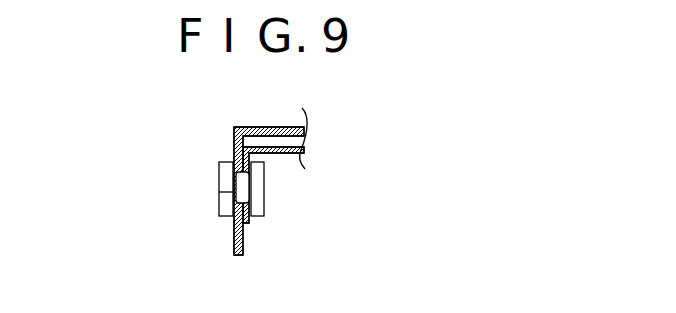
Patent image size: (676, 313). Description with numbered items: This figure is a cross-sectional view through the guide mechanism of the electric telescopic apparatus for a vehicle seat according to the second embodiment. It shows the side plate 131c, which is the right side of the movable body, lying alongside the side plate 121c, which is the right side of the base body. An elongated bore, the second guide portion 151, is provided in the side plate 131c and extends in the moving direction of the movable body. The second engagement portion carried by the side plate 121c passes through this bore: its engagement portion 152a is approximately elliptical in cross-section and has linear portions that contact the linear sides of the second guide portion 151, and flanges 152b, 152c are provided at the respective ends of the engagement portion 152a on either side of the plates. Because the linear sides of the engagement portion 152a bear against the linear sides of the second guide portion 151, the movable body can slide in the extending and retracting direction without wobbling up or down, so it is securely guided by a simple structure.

The side plate 131c is at (234, 146).
The side plate 121c is at (250, 226).
The second guide portion 151 is at (267, 204).
The engagement portion 152a is at (241, 189).
The flange 152b is at (263, 171).
The flange 152c is at (219, 169).